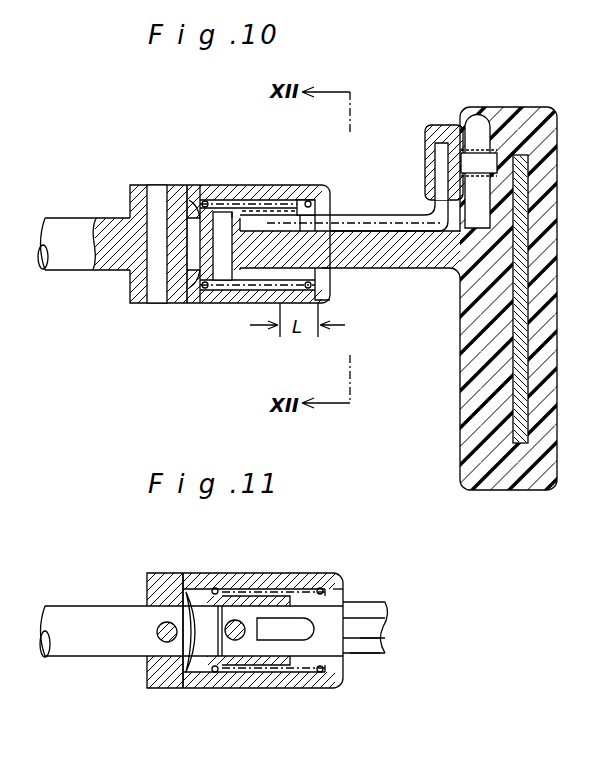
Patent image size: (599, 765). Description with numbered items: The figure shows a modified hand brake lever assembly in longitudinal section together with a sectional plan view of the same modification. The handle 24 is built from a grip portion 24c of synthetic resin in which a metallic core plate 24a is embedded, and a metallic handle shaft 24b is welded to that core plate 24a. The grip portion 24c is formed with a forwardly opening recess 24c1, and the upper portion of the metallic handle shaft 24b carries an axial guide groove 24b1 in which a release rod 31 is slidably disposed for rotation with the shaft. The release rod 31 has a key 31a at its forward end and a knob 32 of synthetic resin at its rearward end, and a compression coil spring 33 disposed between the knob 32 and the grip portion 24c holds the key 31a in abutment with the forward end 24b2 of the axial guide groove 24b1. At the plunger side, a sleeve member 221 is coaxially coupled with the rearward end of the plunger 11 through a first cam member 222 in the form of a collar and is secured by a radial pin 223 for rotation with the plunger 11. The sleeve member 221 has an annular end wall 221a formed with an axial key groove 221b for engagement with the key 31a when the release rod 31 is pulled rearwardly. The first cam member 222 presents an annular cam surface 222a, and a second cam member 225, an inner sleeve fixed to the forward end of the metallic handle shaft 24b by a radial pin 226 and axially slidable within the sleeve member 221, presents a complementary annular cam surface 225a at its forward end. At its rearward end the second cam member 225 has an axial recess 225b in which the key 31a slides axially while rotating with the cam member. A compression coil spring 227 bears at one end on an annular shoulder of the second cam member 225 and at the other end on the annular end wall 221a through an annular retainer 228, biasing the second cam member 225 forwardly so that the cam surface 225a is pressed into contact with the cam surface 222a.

In FIG. 10, the plunger 11 is at (52, 262).
In FIG. 11, the plunger 11 is at (70, 653).
In FIG. 10, the handle 24 is at (557, 325).
In FIG. 10, the metallic core plate 24a is at (524, 385).
In FIG. 10, the metallic handle shaft 24b is at (440, 262).
In FIG. 11, the metallic handle shaft 24b is at (362, 656).
In FIG. 10, the axial guide groove 24b1 is at (402, 230).
In FIG. 11, the axial guide groove 24b1 is at (362, 648).
In FIG. 10, the forward end of the axial guide groove 24b2 is at (238, 215).
In FIG. 11, the forward end of the axial guide groove 24b2 is at (262, 640).
In FIG. 10, the grip portion 24c is at (462, 383).
In FIG. 10, the forwardly opening recess 24c1 is at (477, 125).
In FIG. 10, the release rod 31 is at (386, 222).
In FIG. 11, the release rod 31 is at (362, 620).
In FIG. 10, the key 31a is at (290, 213).
In FIG. 11, the key 31a is at (300, 625).
In FIG. 10, the knob 32 is at (433, 130).
In FIG. 10, the compression coil spring 33 is at (500, 125).
In FIG. 10, the sleeve member 221 is at (138, 304).
In FIG. 11, the sleeve member 221 is at (157, 690).
In FIG. 10, the annular end wall 221a is at (328, 276).
In FIG. 11, the annular end wall 221a is at (340, 596).
In FIG. 10, the axial key groove 221b is at (325, 210).
In FIG. 10, the first cam member 222 is at (132, 285).
In FIG. 11, the first cam member 222 is at (147, 668).
In FIG. 10, the annular cam surface 222a is at (190, 290).
In FIG. 11, the annular cam surface 222a is at (186, 672).
In FIG. 10, the radial pin 223 is at (152, 205).
In FIG. 11, the radial pin 223 is at (157, 631).
In FIG. 10, the second cam member 225 is at (250, 292).
In FIG. 11, the second cam member 225 is at (240, 596).
In FIG. 10, the annular cam surface 225a is at (182, 205).
In FIG. 11, the annular cam surface 225a is at (185, 618).
In FIG. 10, the axial recess 225b is at (258, 210).
In FIG. 10, the radial pin 226 is at (220, 282).
In FIG. 11, the radial pin 226 is at (237, 642).
In FIG. 10, the compression coil spring 227 is at (203, 305).
In FIG. 11, the compression coil spring 227 is at (319, 674).
In FIG. 10, the annular retainer 228 is at (322, 195).
In FIG. 11, the annular retainer 228 is at (340, 690).